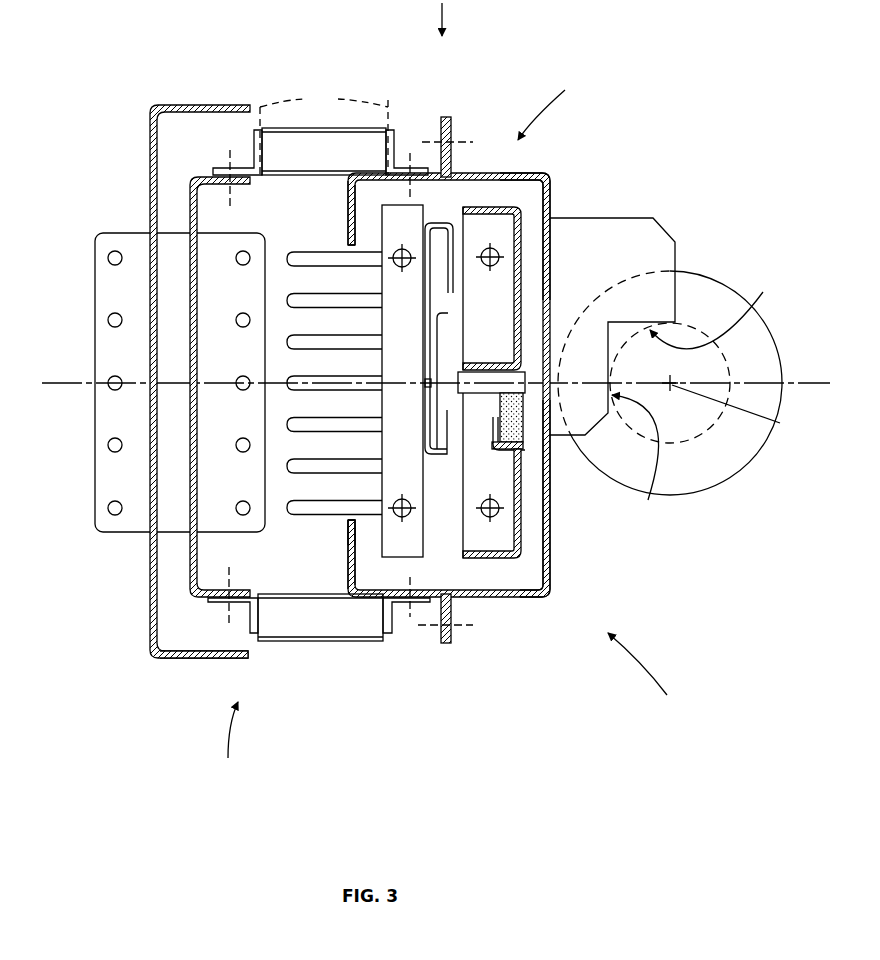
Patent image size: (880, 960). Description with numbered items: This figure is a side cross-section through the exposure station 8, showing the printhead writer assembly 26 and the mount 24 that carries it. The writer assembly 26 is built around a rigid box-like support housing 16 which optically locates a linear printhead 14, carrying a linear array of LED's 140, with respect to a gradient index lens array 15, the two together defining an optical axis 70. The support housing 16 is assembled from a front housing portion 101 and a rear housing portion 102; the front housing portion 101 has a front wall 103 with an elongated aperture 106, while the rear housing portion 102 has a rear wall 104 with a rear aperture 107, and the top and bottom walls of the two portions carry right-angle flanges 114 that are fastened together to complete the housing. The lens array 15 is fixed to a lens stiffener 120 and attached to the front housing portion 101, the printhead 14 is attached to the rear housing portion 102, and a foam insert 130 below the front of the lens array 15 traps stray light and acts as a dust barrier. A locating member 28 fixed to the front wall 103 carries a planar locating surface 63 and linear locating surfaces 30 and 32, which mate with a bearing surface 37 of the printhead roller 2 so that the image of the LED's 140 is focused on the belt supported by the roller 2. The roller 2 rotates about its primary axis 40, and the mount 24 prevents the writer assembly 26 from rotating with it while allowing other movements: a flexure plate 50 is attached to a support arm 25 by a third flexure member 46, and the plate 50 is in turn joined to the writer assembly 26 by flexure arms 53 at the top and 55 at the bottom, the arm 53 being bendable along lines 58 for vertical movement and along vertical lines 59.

The printhead roller 2 is at (700, 268).
The exposure station 8 is at (642, 674).
The linear printhead 14 is at (417, 215).
The gradient index lens array 15 is at (485, 380).
The rigid support housing 16 is at (494, 596).
The mount 24 is at (196, 92).
The support arm 25 is at (195, 658).
The printhead writer assembly 26 is at (402, 426).
The locating member 28 is at (650, 222).
The locating surface 30 is at (716, 309).
The locating surface 32 is at (635, 457).
The bearing surface 37 is at (752, 450).
The primary axis 40 is at (740, 411).
The third flexure member 46 is at (173, 311).
The flexure plate 50 is at (187, 567).
The flexure arm 53 is at (331, 160).
The flexure arm 55 is at (307, 618).
The bend lines 58 is at (256, 165).
The vertical bend lines 59 is at (324, 133).
The planar locating surface 63 is at (602, 242).
The optical axis 70 is at (83, 381).
The front housing portion 101 is at (549, 558).
The rear housing portion 102 is at (345, 550).
The front wall 103 is at (550, 192).
The rear wall 104 is at (348, 216).
The elongated aperture 106 is at (543, 442).
The rear aperture 107 is at (347, 518).
The right-angle flanges 114 is at (452, 125).
The lens stiffener 120 is at (520, 205).
The foam insert 130 is at (519, 446).
The LEDs 140 is at (428, 380).